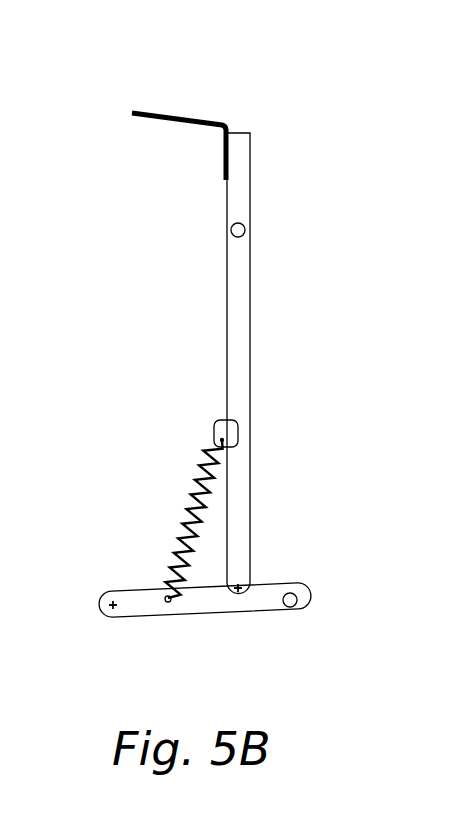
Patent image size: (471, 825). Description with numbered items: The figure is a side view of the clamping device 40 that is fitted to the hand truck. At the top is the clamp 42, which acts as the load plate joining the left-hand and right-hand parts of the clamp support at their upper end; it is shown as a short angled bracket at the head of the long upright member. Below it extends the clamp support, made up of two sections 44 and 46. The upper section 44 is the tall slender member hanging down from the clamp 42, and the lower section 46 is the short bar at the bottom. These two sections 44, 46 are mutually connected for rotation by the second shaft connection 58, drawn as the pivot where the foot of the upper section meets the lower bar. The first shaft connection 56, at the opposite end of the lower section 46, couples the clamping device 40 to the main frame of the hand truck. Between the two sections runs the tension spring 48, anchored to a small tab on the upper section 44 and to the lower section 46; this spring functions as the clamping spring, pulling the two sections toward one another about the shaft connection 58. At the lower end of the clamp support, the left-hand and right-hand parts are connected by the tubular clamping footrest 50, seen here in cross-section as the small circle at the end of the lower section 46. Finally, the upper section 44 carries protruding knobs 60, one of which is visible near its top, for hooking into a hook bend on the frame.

The clamping device 40 is at (133, 322).
The clamp 42 is at (184, 120).
The section of clamp support 44 is at (243, 366).
The section of clamp support 46 is at (140, 598).
The tension spring 48 is at (193, 502).
The tubular clamping footrest 50 is at (307, 610).
The first shaft connection 56 is at (107, 617).
The second shaft connection 58 is at (235, 605).
The protruding knobs 60 is at (246, 233).